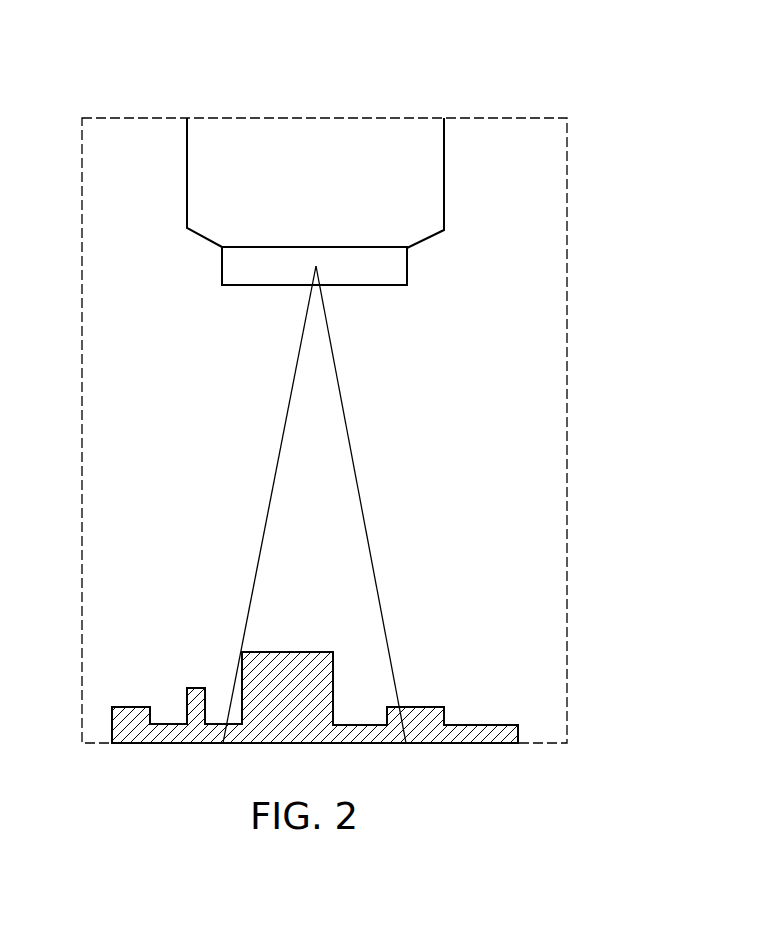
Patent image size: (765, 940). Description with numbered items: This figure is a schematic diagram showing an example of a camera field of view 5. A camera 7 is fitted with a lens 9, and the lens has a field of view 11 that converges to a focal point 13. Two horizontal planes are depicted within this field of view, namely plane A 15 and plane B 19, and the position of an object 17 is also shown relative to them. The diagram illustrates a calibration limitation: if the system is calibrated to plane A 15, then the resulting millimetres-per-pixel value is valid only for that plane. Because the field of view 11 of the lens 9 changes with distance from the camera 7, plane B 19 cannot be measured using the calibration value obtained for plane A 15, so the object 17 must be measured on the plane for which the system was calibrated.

The camera field of view 5 is at (612, 62).
The camera 7 is at (321, 152).
The lens 9 is at (238, 263).
The field of view 11 is at (338, 385).
The focal point 13 is at (282, 652).
The plane A 15 is at (241, 652).
The object 17 is at (112, 718).
The plane B 19 is at (445, 708).